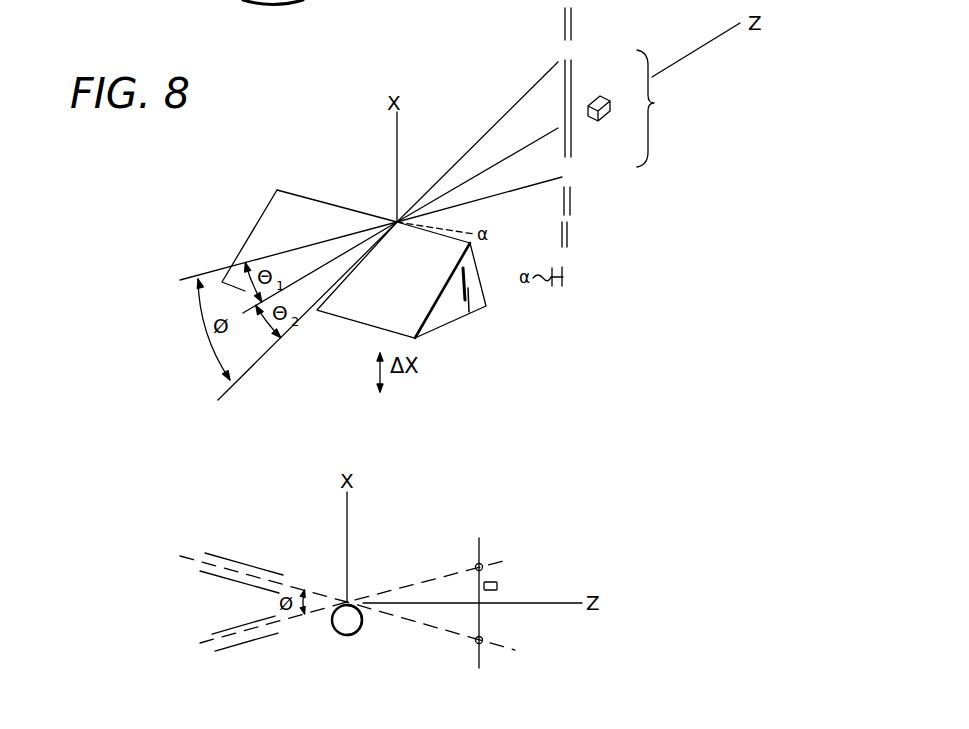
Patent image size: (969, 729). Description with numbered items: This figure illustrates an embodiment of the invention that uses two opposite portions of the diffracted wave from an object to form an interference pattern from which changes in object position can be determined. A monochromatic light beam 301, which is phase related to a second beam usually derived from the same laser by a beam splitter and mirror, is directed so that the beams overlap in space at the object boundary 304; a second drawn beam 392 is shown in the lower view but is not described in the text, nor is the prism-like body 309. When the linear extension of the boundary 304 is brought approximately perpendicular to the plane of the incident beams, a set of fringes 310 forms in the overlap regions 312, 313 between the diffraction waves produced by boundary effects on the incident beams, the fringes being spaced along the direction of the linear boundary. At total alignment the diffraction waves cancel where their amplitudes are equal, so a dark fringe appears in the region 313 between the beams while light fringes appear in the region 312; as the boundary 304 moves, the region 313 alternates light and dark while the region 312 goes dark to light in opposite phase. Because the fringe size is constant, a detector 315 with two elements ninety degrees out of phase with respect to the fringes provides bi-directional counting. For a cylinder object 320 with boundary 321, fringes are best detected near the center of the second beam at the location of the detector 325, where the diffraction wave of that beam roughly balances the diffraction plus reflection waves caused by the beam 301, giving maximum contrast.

The monochromatic light beam 301 is at (227, 567).
The object boundary 304 is at (302, 196).
The prism 309 is at (429, 287).
The fringes 310 is at (562, 115).
The overlap region 312 is at (582, 45).
The overlap region 313 is at (654, 103).
The detector 315 is at (610, 100).
The cylinder object 320 is at (337, 634).
The boundary 321 is at (361, 611).
The detector 325 is at (497, 585).
The scattered light beam 392 is at (207, 650).